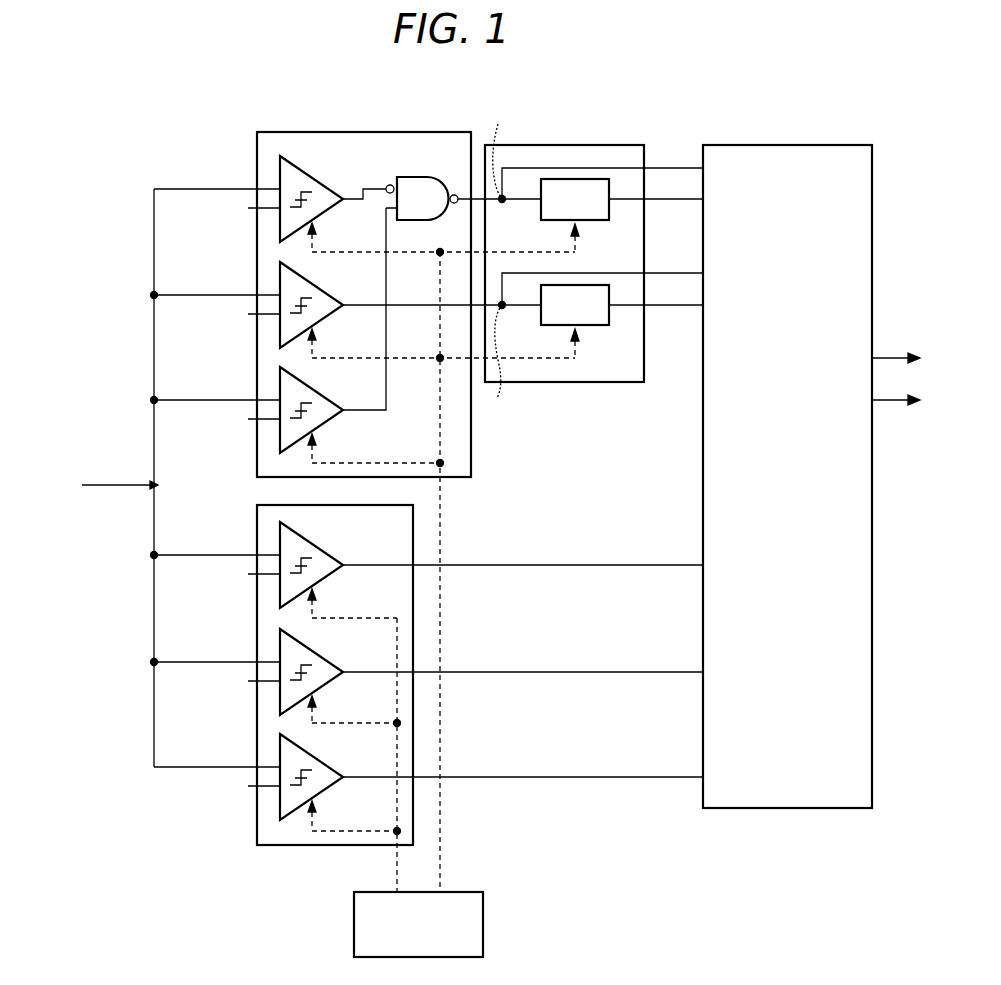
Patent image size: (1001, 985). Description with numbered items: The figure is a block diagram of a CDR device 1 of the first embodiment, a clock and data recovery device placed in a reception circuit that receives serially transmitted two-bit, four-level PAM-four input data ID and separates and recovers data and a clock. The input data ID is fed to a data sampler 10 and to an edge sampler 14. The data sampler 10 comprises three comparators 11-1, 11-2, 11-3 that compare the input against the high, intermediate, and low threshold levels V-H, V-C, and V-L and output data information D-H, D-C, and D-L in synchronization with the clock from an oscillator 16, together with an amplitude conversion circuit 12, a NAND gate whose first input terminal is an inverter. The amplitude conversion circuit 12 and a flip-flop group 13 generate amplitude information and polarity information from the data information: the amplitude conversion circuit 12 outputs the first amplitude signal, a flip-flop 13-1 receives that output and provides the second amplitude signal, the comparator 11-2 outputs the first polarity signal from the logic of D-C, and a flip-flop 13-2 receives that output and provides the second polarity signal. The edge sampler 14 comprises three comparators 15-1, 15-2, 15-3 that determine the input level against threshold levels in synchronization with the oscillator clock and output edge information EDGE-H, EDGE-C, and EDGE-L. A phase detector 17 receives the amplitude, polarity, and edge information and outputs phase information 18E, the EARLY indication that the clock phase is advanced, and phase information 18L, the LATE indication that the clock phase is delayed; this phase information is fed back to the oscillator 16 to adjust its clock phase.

The CDR device 1 is at (105, 245).
The data sampler 10 is at (362, 132).
The comparator 11-1 is at (313, 178).
The comparator 11-2 is at (313, 284).
The comparator 11-3 is at (313, 389).
The amplitude conversion circuit 12 is at (410, 177).
The flip-flop group 13 is at (562, 145).
The flip-flop 13-1 is at (596, 221).
The flip-flop 13-2 is at (596, 327).
The edge sampler 14 is at (257, 835).
The comparator 15-1 is at (313, 544).
The comparator 15-2 is at (313, 651).
The comparator 15-3 is at (313, 756).
The oscillator 16 is at (483, 925).
The phase detector 17 is at (785, 145).
The phase information 18E is at (896, 357).
The phase information 18L is at (896, 402).